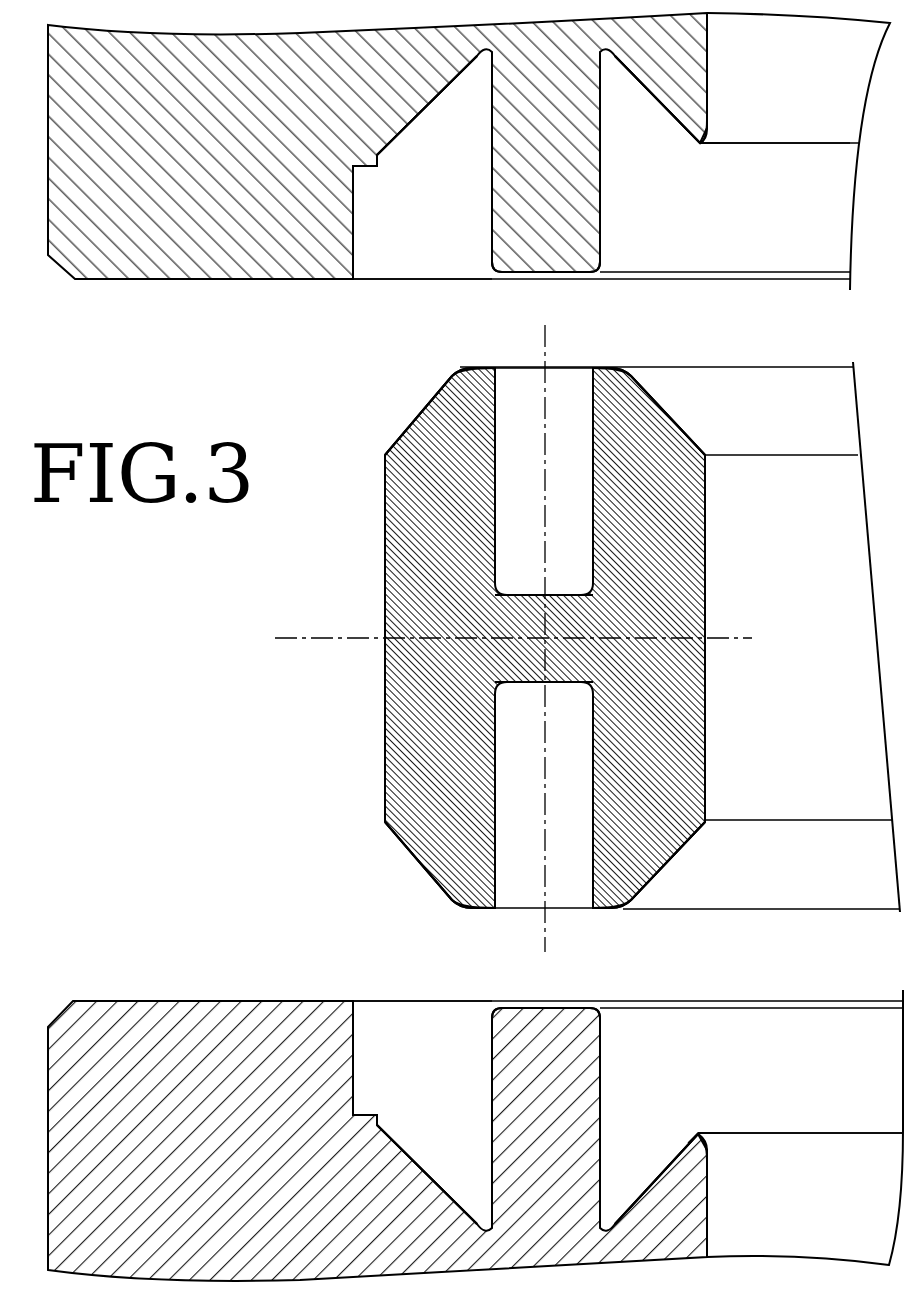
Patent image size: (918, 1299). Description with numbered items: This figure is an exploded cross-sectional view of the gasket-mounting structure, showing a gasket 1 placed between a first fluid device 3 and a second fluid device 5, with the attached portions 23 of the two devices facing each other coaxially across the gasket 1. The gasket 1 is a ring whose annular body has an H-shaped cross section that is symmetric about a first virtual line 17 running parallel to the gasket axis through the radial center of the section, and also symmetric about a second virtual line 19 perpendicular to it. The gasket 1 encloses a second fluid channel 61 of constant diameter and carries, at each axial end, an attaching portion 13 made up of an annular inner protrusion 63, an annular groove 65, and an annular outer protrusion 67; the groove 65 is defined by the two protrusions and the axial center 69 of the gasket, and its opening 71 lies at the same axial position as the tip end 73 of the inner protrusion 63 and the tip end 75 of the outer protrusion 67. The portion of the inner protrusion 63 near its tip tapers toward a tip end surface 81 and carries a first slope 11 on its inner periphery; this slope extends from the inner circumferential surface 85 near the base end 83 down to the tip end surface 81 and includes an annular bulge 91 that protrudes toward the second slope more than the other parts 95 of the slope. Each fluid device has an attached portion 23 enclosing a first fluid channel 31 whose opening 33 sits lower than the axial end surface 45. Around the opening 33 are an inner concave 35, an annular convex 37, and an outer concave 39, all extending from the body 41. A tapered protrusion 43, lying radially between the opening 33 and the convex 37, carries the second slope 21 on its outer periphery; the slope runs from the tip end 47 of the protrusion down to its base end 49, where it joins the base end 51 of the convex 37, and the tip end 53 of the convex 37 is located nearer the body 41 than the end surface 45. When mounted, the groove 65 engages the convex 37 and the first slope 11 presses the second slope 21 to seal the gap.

The gasket 1 is at (467, 638).
The first fluid device 3 is at (97, 962).
The second fluid device 5 is at (97, 317).
The first slope 11 is at (400, 426).
The attaching portion 13 is at (362, 479).
The first virtual line 17 is at (546, 487).
The second virtual line 19 is at (298, 641).
The second slope 21 is at (650, 99).
The attached portion 23 is at (378, 284).
The first fluid channel 31 is at (849, 93).
The opening 33 is at (803, 146).
The inner concave 35 is at (618, 139).
The convex 37 is at (604, 231).
The outer concave 39 is at (470, 139).
The body 41 is at (695, 25).
The protrusion 43 is at (695, 108).
The axial end surface 45 is at (240, 281).
The tip end 47 is at (701, 146).
The base end 49 is at (675, 48).
The base end 51 is at (530, 50).
The tip end 53 is at (580, 272).
The second fluid channel 61 is at (819, 653).
The inner protrusion 63 is at (709, 512).
The groove 65 is at (523, 390).
The outer protrusion 67 is at (380, 545).
The axial center 69 is at (548, 682).
The opening 71 is at (567, 367).
The tip end 73 is at (602, 367).
The tip end 75 is at (466, 366).
The tip end surface 81 is at (617, 367).
The base end 83 is at (688, 600).
The inner circumferential surface 85 is at (707, 470).
The bulge 91 is at (450, 368).
The other parts 95 is at (437, 397).